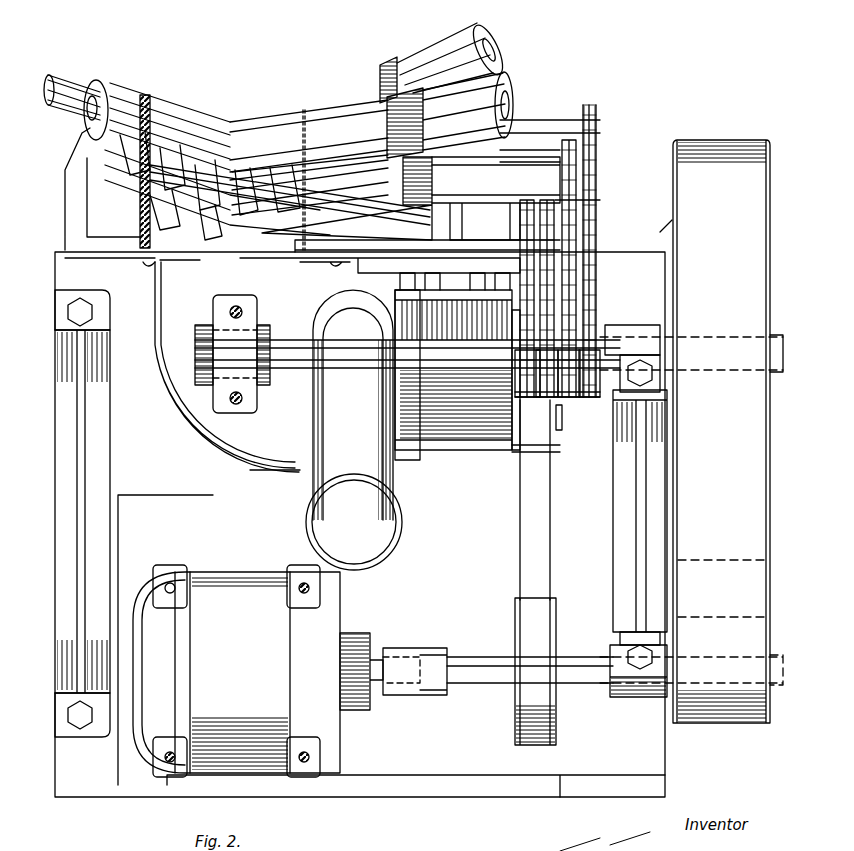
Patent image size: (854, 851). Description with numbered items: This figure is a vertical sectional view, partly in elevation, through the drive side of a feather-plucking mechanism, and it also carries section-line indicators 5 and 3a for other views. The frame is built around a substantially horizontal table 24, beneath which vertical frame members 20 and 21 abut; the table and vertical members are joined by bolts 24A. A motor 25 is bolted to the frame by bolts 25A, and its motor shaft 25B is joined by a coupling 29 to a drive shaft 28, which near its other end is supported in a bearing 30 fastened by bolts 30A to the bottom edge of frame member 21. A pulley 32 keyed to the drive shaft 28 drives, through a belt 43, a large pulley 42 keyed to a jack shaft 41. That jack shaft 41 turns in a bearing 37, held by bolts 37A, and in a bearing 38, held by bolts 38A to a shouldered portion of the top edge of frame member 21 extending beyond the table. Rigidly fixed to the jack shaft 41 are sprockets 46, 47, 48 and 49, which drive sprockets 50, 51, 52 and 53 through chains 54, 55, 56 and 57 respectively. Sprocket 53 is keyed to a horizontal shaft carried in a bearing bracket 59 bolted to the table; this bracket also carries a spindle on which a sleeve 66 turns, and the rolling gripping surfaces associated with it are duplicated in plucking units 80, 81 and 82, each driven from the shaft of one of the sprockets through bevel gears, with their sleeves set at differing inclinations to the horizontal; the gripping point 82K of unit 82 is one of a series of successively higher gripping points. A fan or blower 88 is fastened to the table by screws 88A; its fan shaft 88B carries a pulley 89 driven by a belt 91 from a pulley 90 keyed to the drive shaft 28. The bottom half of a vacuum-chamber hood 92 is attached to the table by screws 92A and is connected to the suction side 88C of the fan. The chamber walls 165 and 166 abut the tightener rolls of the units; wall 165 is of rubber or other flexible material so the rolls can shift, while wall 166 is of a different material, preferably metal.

The section line 5- 5 is at (46, 194).
The section line 3a- 3a is at (145, 828).
The table 24 is at (55, 270).
The bolts 24A is at (68, 725).
The vertical frame member 20 is at (100, 457).
The vertical frame member 21 is at (612, 487).
The hood 92 is at (192, 424).
The screws 92A is at (348, 268).
The suction side of the fan 88C is at (292, 462).
The wall of vacuum chamber 165 is at (152, 100).
The gripping point 82K is at (262, 125).
The wall of vacuum chamber 166 is at (340, 126).
The plucking unit 82 is at (297, 109).
The plucking unit 81 is at (350, 94).
The plucking unit 80 is at (338, 204).
The sleeve 66 is at (390, 204).
The bearing bracket 59 is at (421, 242).
The sprocket 52 is at (562, 200).
The sprocket 50 is at (598, 112).
The sprocket 51 is at (578, 200).
The sprocket 53 is at (560, 228).
The chain 57 is at (565, 240).
The chain 56 is at (590, 252).
The chain 55 is at (590, 268).
The chain 54 is at (598, 282).
The sprocket 48 is at (555, 305).
The sprocket 47 is at (575, 315).
The sprocket 46 is at (590, 318).
The large pulley 42 is at (657, 215).
The jack shaft 41 is at (466, 364).
The bearing 37 is at (255, 312).
The bolts 37A is at (240, 308).
The fan or blower 88 is at (395, 474).
The screws 88A is at (415, 292).
The fan shaft 88B is at (562, 425).
The pulley 89 is at (556, 452).
The sprocket 49 is at (516, 318).
The belt 91 is at (520, 520).
The pulley 90 is at (556, 612).
The bearing 38 is at (640, 316).
The bolts 38A is at (640, 360).
The belt 43 is at (730, 600).
The pulley 32 is at (772, 722).
The motor 25 is at (254, 560).
The bolts 25A is at (172, 583).
The motor shaft 25B is at (376, 655).
The coupling 29 is at (405, 647).
The drive shaft 28 is at (495, 668).
The bolts 30A is at (628, 657).
The bearing 30 is at (640, 690).